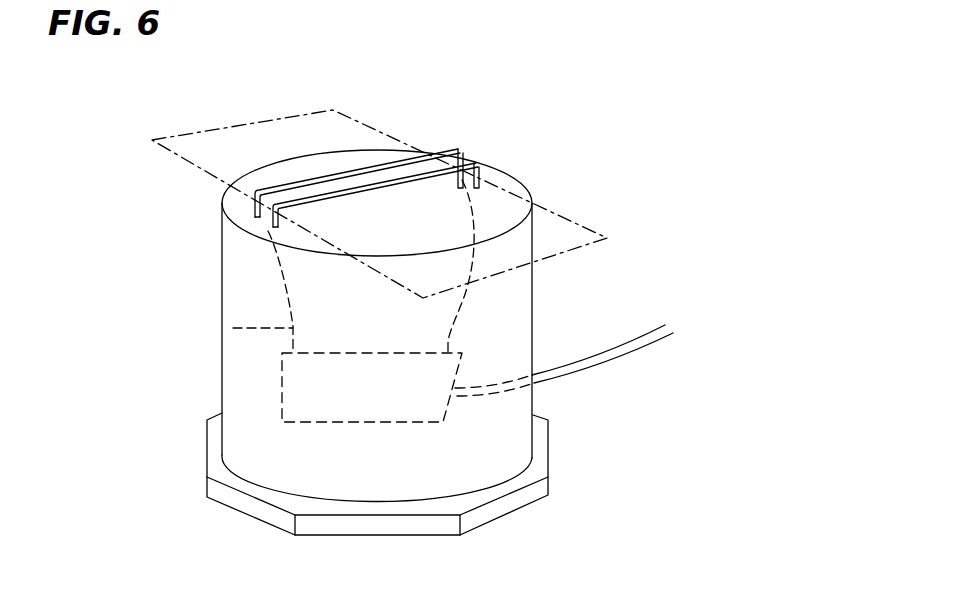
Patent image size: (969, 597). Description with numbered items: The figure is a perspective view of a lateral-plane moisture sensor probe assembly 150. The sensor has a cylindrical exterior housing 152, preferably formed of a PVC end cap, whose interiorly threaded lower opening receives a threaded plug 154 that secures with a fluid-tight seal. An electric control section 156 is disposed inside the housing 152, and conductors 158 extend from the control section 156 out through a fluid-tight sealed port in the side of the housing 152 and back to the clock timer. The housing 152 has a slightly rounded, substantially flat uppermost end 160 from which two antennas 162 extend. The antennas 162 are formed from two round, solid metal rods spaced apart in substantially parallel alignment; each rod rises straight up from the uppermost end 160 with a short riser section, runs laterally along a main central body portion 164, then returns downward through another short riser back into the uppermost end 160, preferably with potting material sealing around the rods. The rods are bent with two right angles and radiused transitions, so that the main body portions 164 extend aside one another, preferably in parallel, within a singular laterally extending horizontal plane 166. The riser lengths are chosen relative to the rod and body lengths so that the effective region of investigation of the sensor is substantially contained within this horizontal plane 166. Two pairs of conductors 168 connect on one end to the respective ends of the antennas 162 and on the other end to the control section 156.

The lateral-plane moisture sensor probe assembly 150 is at (208, 277).
The cylindrical exterior housing 152 is at (532, 292).
The threaded plug 154 is at (535, 493).
The electric control section 156 is at (378, 405).
The conductors 158 is at (617, 347).
The uppermost end 160 is at (233, 207).
The antennas 162 is at (460, 152).
The main central body portions 164 is at (340, 193).
The horizontal plane 166 is at (337, 122).
The pairs of conductors 168 is at (223, 328).